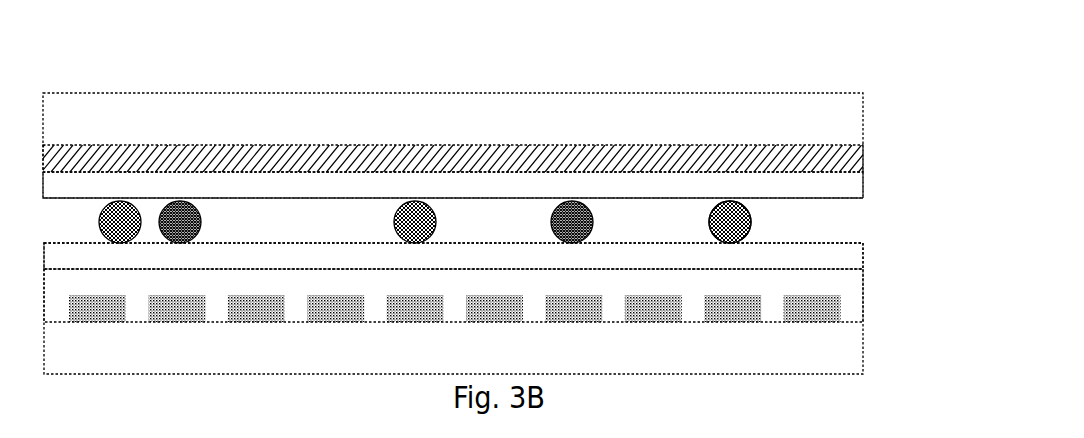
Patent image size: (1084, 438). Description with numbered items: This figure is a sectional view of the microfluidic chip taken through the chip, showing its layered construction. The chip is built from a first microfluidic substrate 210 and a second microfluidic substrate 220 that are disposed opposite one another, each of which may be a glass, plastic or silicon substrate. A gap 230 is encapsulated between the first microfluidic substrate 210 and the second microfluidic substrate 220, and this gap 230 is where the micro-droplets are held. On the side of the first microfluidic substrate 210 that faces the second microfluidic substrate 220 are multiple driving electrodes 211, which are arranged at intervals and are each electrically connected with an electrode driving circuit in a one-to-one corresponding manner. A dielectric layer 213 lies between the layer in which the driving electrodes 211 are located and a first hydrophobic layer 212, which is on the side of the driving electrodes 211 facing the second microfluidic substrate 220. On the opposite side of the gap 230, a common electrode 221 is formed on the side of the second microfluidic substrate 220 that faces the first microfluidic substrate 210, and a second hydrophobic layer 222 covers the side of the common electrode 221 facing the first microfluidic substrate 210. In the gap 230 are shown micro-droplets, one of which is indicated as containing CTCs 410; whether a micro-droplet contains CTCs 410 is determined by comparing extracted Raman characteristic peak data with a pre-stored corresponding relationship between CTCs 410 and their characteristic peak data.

The first microfluidic substrate 210 is at (837, 347).
The driving electrodes 211 is at (823, 312).
The first hydrophobic layer 212 is at (833, 255).
The dielectric layer 213 is at (850, 283).
The second microfluidic substrate 220 is at (840, 118).
The common electrode 221 is at (837, 155).
The second hydrophobic layer 222 is at (847, 187).
The gap 230 is at (858, 219).
The CTCs 410 is at (736, 203).